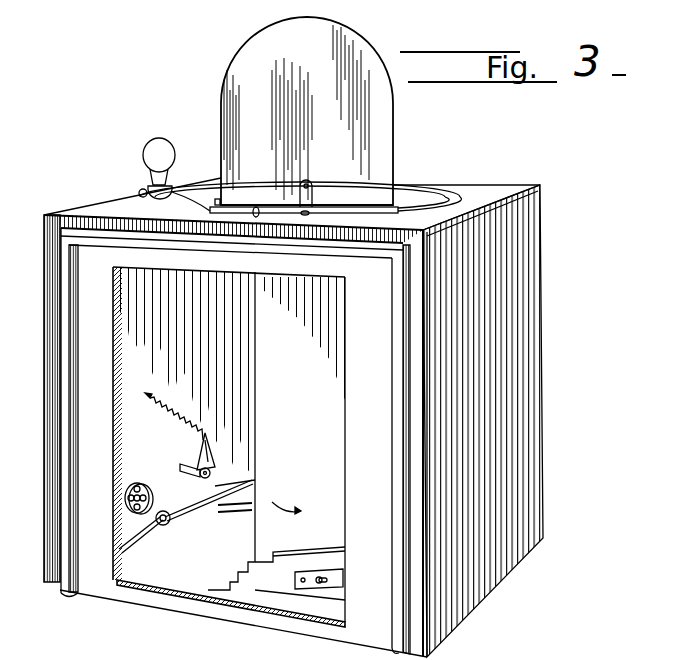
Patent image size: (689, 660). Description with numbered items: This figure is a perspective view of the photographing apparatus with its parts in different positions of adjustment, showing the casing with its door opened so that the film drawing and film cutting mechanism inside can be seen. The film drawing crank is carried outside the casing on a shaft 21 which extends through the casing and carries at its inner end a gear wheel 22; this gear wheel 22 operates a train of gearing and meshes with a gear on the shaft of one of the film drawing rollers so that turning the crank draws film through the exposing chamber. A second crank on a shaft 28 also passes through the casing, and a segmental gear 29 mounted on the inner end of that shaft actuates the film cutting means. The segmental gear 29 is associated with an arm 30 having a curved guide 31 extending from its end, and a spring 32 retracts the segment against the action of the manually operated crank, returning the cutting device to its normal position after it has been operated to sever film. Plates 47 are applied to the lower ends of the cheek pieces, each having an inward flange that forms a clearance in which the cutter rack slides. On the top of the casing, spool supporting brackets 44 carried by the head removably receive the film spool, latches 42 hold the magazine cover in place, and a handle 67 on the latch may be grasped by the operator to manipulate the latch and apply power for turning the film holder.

The spool supporting brackets 44 is at (344, 42).
The latches 42 is at (308, 192).
The handle 67 is at (158, 147).
The plates 47 is at (272, 582).
The spring 32 is at (170, 416).
The curved guide 31 is at (214, 452).
The arm 30 is at (199, 451).
The shaft 28 is at (207, 481).
The segmental gear 29 is at (212, 497).
The gear wheel 22 is at (161, 528).
The shaft 21 is at (164, 527).